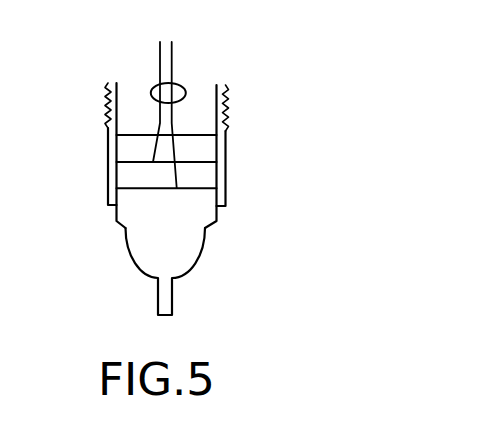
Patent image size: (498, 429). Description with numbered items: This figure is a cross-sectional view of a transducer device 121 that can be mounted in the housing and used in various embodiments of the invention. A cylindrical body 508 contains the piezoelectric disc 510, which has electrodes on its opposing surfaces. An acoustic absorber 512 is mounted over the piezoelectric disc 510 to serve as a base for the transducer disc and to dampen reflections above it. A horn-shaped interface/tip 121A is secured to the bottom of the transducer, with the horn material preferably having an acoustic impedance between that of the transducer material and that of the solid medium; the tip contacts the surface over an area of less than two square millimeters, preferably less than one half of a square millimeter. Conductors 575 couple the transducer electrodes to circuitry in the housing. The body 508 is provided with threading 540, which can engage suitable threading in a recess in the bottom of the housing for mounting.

The transducer device 121 is at (411, 67).
The horn-shaped interface/tip 121A is at (162, 295).
The cylindrical body 508 is at (108, 150).
The piezoelectric disc 510 is at (208, 178).
The acoustic absorber 512 is at (208, 151).
The threading 540 is at (228, 110).
The conductors 575 is at (151, 89).